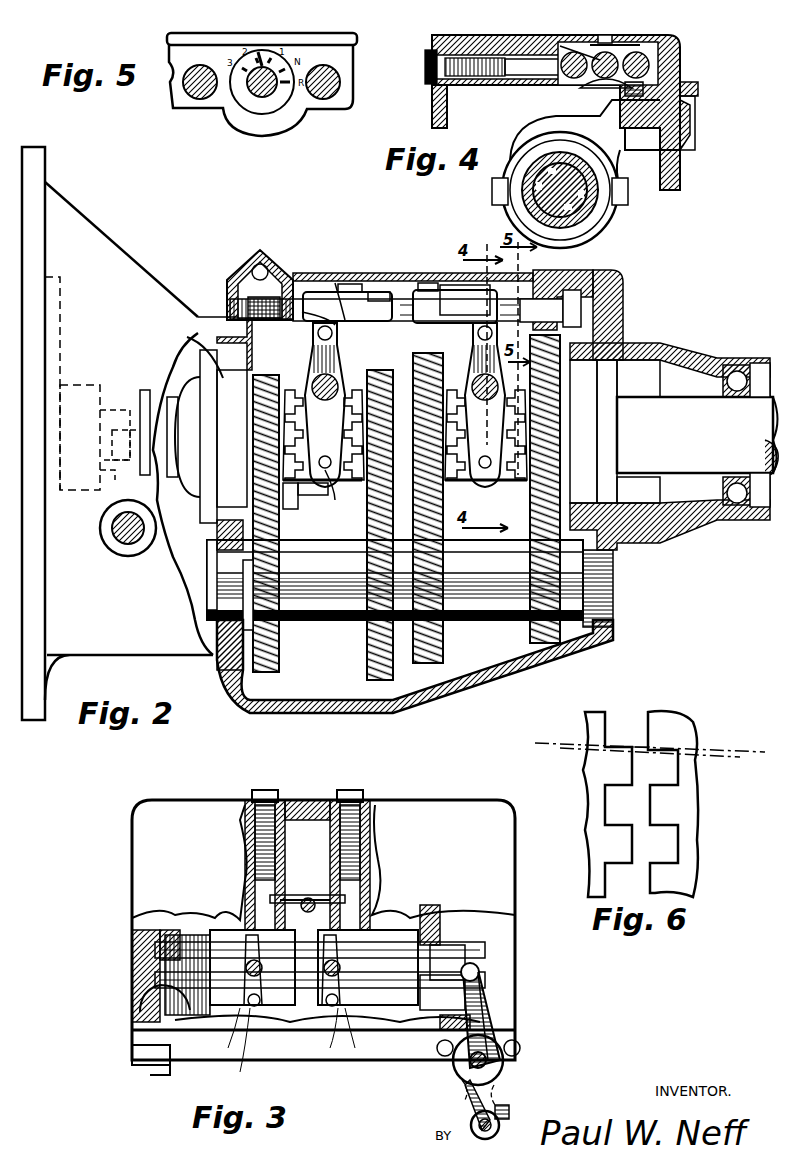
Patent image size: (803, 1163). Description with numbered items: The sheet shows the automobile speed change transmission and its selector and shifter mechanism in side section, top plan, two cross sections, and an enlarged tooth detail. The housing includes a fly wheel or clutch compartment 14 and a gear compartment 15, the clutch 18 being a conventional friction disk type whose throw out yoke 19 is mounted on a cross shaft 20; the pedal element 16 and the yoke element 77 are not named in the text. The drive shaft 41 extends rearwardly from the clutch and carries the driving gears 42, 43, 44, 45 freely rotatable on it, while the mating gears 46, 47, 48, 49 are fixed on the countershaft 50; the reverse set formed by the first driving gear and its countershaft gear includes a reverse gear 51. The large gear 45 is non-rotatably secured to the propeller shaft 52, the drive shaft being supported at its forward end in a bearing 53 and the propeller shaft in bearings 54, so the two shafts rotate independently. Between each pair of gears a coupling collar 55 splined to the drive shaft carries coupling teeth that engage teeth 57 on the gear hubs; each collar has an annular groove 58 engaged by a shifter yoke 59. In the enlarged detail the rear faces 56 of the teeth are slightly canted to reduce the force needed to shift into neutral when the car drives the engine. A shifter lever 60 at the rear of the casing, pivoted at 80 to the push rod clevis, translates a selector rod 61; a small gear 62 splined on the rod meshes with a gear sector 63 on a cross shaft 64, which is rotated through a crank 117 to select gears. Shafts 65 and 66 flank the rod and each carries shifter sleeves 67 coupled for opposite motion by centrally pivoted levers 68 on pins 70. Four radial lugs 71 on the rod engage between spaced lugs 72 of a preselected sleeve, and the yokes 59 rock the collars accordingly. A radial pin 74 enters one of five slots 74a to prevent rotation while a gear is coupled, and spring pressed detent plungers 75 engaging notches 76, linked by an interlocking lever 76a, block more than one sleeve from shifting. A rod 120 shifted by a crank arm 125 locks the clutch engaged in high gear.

In FIG. 2, the fly wheel or clutch compartment 14 is at (122, 246).
In FIG. 2, the gear compartment 15 is at (393, 713).
In FIG. 2, the pedal 16 is at (90, 383).
In FIG. 2, the clutch 18 is at (68, 322).
In FIG. 2, the throw out yoke 19 is at (113, 488).
In FIG. 2, the cross shaft 20 is at (112, 528).
In FIG. 4, the drive shaft 41 is at (580, 212).
In FIG. 2, the drive shaft 41 is at (160, 385).
In FIG. 2, the driving gear 42 is at (266, 375).
In FIG. 2, the driving gear 43 is at (382, 370).
In FIG. 2, the driving gear 44 is at (428, 353).
In FIG. 2, the large gear 45 is at (560, 370).
In FIG. 2, the countershaft gear 46 is at (280, 638).
In FIG. 2, the countershaft gear 47 is at (367, 656).
In FIG. 2, the countershaft gear 48 is at (443, 637).
In FIG. 2, the countershaft gear 49 is at (540, 630).
In FIG. 2, the countershaft 50 is at (352, 595).
In FIG. 2, the reverse gear 51 is at (298, 495).
In FIG. 2, the propeller shaft 52 is at (688, 412).
In FIG. 2, the bearing 53 is at (325, 490).
In FIG. 2, the bearing 54 is at (737, 371).
In FIG. 4, the coupling block or collar 55 is at (615, 200).
In FIG. 2, the coupling block or collar 55 is at (200, 375).
In FIG. 6, the coupling block or collar 55 is at (683, 800).
In FIG. 6, the rear faces of the teeth 56 is at (640, 748).
In FIG. 2, the teeth 57 is at (290, 390).
In FIG. 6, the teeth 57 is at (617, 778).
In FIG. 4, the annular groove 58 is at (598, 205).
In FIG. 2, the annular groove 58 is at (335, 500).
In FIG. 4, the shifter yoke 59 is at (515, 150).
In FIG. 2, the shifter yoke 59 is at (340, 345).
In FIG. 2, the shifter lever 60 is at (580, 290).
In FIG. 3, the shifter lever 60 is at (500, 1098).
In FIG. 5, the selector rod 61 is at (255, 95).
In FIG. 4, the selector rod 61 is at (600, 86).
In FIG. 2, the selector rod 61 is at (623, 300).
In FIG. 3, the selector rod 61 is at (455, 980).
In FIG. 2, the small gear 62 is at (312, 292).
In FIG. 3, the small gear 62 is at (170, 930).
In FIG. 2, the gear sector 63 is at (238, 285).
In FIG. 2, the cross shaft 64 is at (260, 262).
In FIG. 3, the cross shaft 64 is at (160, 1000).
In FIG. 5, the shaft 65 is at (198, 90).
In FIG. 4, the shaft 65 is at (568, 78).
In FIG. 2, the shaft 65 is at (424, 290).
In FIG. 3, the shaft 65 is at (420, 920).
In FIG. 5, the shaft 66 is at (323, 90).
In FIG. 4, the shaft 66 is at (649, 62).
In FIG. 3, the shaft 66 is at (430, 980).
In FIG. 2, the shifter sleeve 67 is at (335, 283).
In FIG. 3, the shifter sleeve 67 is at (294, 1037).
In FIG. 4, the centrally pivoted lever 68 is at (600, 52).
In FIG. 2, the centrally pivoted lever 68 is at (378, 292).
In FIG. 3, the centrally pivoted lever 68 is at (330, 1008).
In FIG. 4, the pin 70 is at (615, 45).
In FIG. 2, the pin 70 is at (350, 284).
In FIG. 3, the pin 70 is at (284, 1049).
In FIG. 4, the lug 71 is at (640, 45).
In FIG. 3, the lug 71 is at (256, 1008).
In FIG. 4, the lug 72 is at (580, 52).
In FIG. 3, the lug 72 is at (312, 898).
In FIG. 5, the radial pin 74 is at (288, 62).
In FIG. 2, the radial pin 74 is at (525, 299).
In FIG. 3, the radial pin 74 is at (480, 972).
In FIG. 5, the radial slot 74a is at (258, 56).
In FIG. 3, the radial slot 74a is at (485, 985).
In FIG. 4, the detent plunger 75 is at (625, 92).
In FIG. 2, the detent plunger 75 is at (420, 318).
In FIG. 3, the detent plunger 75 is at (255, 875).
In FIG. 3, the notch 76 is at (250, 935).
In FIG. 3, the interlocking lever 76a is at (318, 900).
In FIG. 3, the shift fork 77 is at (368, 967).
In FIG. 3, the pivot 80 is at (472, 1120).
In FIG. 3, the crank 117 is at (150, 1075).
In FIG. 4, the rod 120 is at (698, 90).
In FIG. 4, the crank arm 125 is at (695, 118).